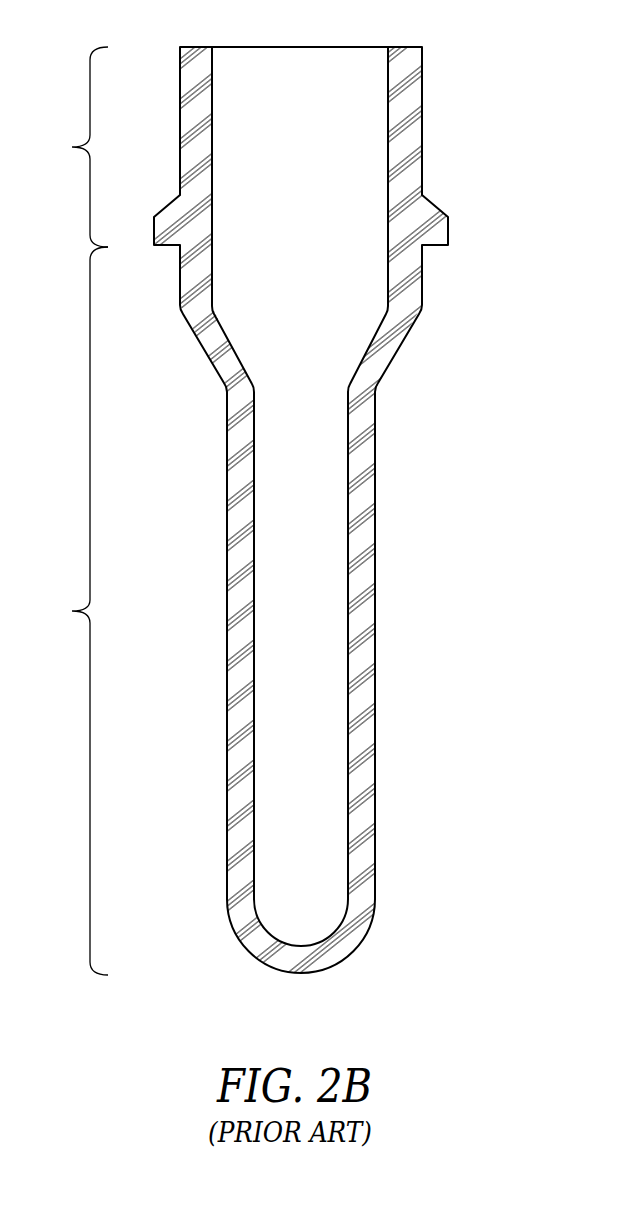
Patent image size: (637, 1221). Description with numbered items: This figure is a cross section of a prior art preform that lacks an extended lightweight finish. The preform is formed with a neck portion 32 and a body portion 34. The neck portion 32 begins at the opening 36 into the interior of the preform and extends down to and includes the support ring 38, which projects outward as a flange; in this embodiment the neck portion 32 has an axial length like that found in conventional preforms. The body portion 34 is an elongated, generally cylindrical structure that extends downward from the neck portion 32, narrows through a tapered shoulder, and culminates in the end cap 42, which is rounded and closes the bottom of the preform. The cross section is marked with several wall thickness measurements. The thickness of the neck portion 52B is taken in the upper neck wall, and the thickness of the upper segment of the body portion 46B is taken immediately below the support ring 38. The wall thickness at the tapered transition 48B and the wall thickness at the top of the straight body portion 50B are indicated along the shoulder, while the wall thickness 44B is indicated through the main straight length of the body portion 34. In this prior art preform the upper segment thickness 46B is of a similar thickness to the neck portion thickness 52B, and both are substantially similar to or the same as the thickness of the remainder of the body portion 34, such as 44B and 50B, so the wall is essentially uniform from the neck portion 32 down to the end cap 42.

The neck portion 32 is at (77, 147).
The body portion 34 is at (77, 611).
The opening 36 is at (322, 47).
The support ring 38 is at (435, 207).
The end cap 42 is at (301, 974).
The wall thickness of the body portion 44B is at (312, 831).
The thickness of the upper segment of the body portion 46B is at (353, 276).
The wall thickness at the tapered transition of the body portion 48B is at (340, 338).
The wall thickness at the top of the straight body portion 50B is at (312, 392).
The thickness of the neck portion 52B is at (353, 147).